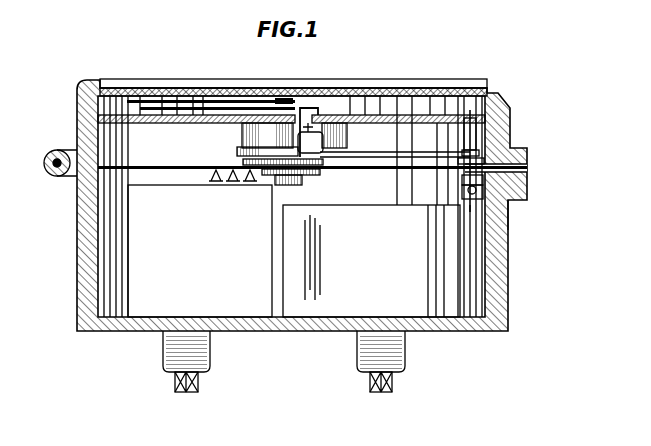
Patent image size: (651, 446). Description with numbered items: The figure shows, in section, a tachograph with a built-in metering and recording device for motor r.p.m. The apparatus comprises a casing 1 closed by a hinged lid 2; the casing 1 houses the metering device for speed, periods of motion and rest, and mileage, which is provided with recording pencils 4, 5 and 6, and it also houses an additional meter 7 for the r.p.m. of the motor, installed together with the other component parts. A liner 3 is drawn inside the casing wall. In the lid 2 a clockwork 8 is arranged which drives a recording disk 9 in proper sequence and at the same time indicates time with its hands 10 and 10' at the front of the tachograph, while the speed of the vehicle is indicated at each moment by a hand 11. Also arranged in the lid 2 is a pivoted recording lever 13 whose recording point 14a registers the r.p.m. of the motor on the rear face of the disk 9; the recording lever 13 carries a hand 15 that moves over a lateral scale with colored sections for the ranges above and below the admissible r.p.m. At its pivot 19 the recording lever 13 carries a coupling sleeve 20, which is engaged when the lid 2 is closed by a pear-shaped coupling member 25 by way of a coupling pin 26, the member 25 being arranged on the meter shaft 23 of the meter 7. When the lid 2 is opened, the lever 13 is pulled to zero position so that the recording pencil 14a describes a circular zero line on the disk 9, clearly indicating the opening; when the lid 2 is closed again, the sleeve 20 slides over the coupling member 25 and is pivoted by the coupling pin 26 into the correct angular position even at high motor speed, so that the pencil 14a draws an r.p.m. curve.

The casing 1 is at (80, 246).
The hinged lid 2 is at (78, 123).
The left liner 3 is at (129, 312).
The recording pencil 4 is at (215, 179).
The recording pencil 5 is at (232, 181).
The recording pencil 6 is at (250, 181).
The additional meter 7 is at (456, 305).
The clockwork 8 is at (241, 136).
The recording disk 9 is at (352, 172).
The hand 10 is at (211, 82).
The hand 10' is at (217, 84).
The hand 11 is at (143, 87).
The pivoted recording lever 13 is at (404, 155).
The recording point 14a is at (327, 175).
The hand 15 is at (305, 105).
The pivot 19 is at (478, 134).
The coupling sleeve 20 is at (520, 165).
The meter shaft 23 is at (509, 205).
The pear-shaped coupling member 25 is at (462, 181).
The coupling pin 26 is at (468, 197).